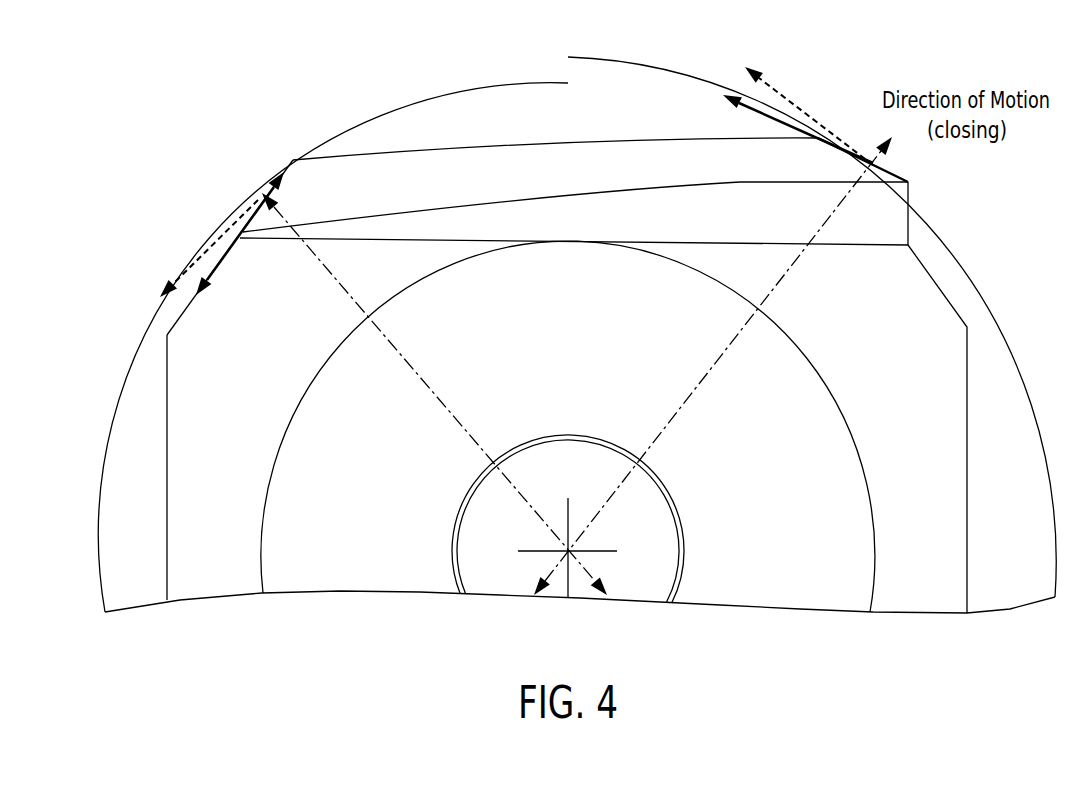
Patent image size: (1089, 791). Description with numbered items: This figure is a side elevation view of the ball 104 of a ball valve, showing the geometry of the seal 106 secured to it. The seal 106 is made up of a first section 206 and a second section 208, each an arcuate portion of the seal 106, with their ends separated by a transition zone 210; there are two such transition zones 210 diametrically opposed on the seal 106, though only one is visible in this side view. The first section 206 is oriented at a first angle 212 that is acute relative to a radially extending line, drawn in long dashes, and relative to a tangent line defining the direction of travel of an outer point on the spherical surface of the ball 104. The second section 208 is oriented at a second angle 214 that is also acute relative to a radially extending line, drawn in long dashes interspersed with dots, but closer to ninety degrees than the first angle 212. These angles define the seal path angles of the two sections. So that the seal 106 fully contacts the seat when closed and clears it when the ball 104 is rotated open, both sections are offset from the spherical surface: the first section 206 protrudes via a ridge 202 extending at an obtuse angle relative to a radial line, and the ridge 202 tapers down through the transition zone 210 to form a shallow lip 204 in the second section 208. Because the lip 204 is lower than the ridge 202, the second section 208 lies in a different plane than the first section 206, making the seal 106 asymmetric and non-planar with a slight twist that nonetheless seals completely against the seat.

The ball 104 is at (947, 486).
The seal 106 is at (388, 150).
The ridge 202 is at (898, 215).
The lip 204 is at (240, 232).
The first section 206 is at (755, 163).
The second section 208 is at (306, 198).
The transition zone 210 is at (573, 174).
The first angle 212 is at (723, 67).
The second angle 214 is at (163, 302).